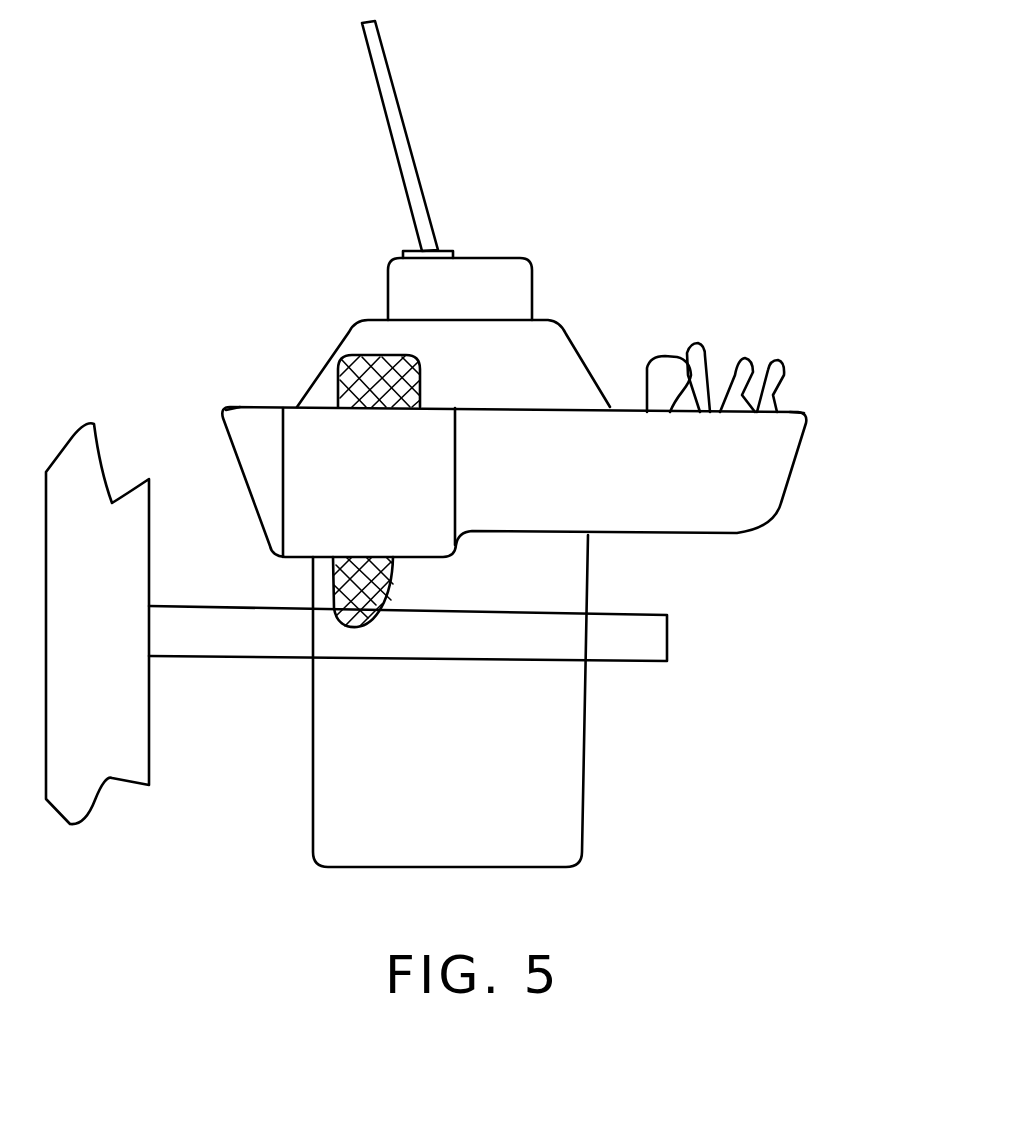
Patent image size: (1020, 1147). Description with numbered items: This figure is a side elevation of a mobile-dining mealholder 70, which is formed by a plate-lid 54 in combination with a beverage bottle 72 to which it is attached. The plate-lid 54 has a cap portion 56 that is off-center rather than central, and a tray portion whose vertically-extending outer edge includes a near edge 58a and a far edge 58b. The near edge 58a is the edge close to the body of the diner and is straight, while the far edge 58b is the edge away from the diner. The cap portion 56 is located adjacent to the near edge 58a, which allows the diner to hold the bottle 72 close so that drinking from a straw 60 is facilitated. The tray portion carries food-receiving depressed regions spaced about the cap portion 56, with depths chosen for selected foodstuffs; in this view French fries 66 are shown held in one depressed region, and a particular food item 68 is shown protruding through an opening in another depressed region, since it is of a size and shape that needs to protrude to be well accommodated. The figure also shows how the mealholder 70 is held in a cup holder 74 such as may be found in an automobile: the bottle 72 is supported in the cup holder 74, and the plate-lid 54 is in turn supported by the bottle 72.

The plate-lid 54 is at (775, 470).
The cap portion 56 is at (523, 281).
The near edge 58a is at (223, 408).
The far edge 58b is at (813, 425).
The straw 60 is at (390, 88).
The French fries 66 is at (695, 348).
The food item 68 is at (377, 380).
The mobile-dining mealholder 70 is at (623, 307).
The bottle 72 is at (570, 812).
The cup holder 74 is at (623, 655).